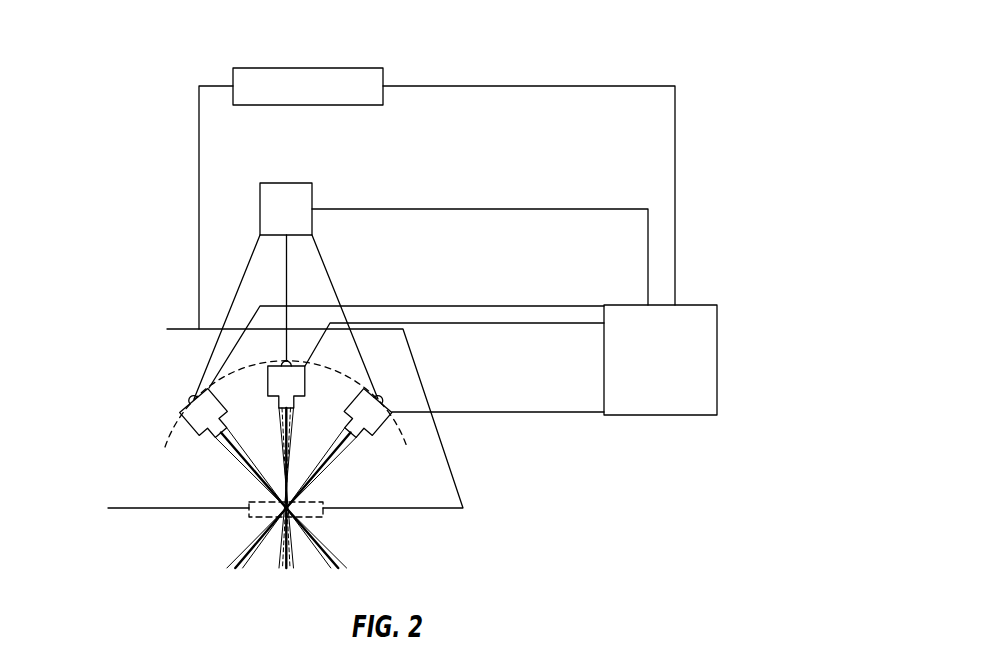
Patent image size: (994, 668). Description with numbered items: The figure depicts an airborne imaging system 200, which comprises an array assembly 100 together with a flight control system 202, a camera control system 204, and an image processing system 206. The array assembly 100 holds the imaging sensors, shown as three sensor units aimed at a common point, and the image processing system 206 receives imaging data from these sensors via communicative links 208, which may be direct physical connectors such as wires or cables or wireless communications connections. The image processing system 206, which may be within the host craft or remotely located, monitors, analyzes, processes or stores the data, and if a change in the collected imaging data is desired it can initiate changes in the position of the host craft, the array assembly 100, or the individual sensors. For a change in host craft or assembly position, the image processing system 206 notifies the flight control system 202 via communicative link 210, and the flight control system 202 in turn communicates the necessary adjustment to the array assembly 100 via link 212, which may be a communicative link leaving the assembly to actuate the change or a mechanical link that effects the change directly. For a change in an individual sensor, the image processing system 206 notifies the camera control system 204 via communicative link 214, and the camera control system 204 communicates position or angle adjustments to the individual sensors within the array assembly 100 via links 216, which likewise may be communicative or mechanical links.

The array assembly 100 is at (120, 474).
The airborne imaging system 200 is at (657, 47).
The flight control system 202 is at (297, 77).
The camera control system 204 is at (297, 192).
The image processing system 206 is at (694, 368).
The communicative links 208 is at (514, 306).
The communicative link 210 is at (514, 86).
The link 212 is at (199, 120).
The communicative link 214 is at (514, 209).
The links 216 is at (288, 272).